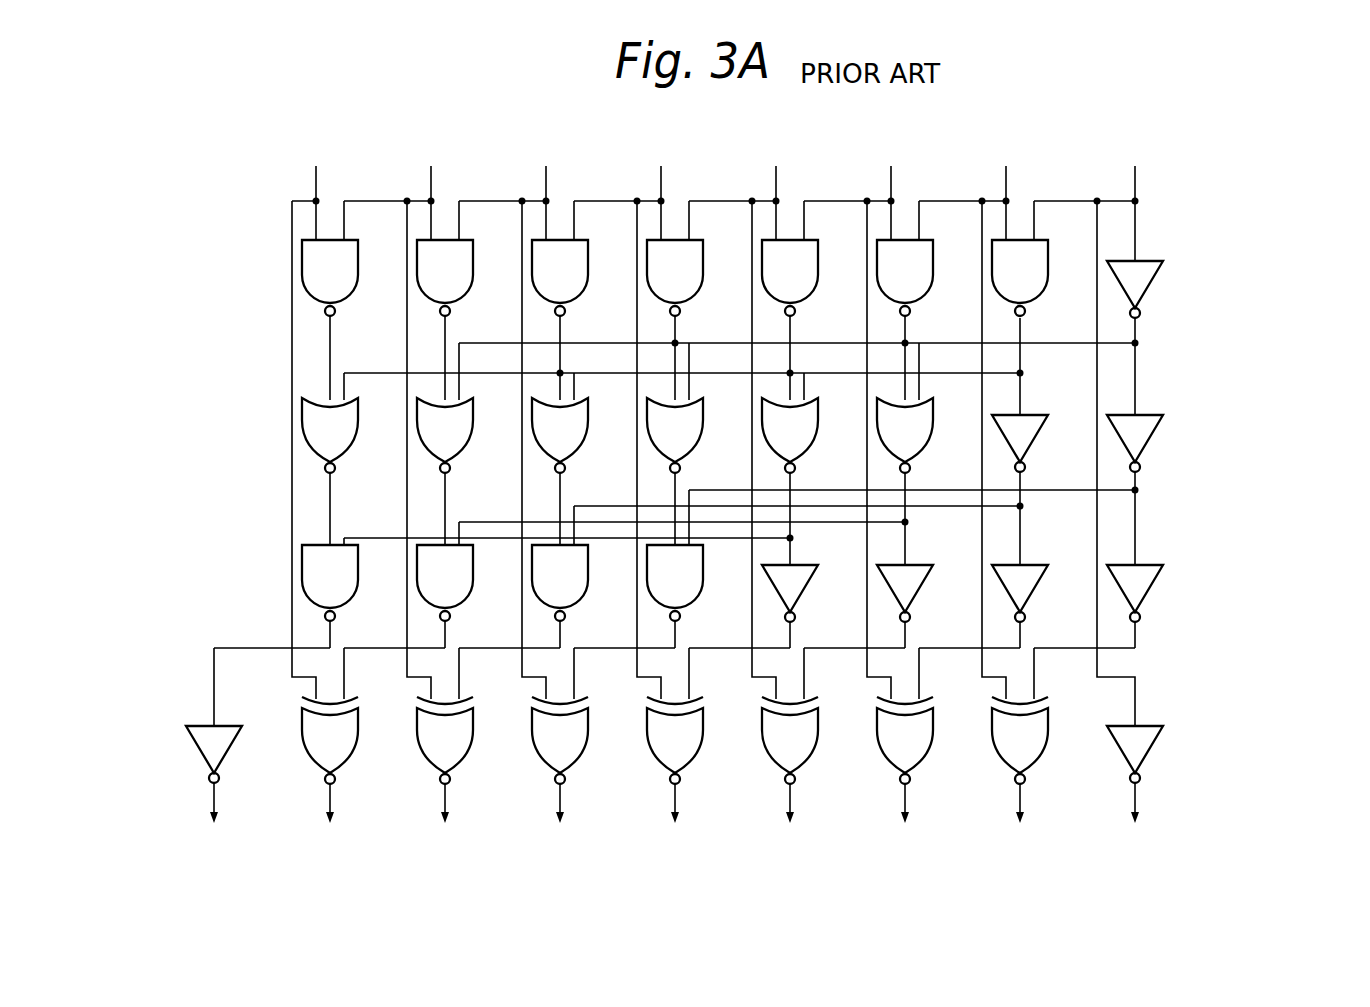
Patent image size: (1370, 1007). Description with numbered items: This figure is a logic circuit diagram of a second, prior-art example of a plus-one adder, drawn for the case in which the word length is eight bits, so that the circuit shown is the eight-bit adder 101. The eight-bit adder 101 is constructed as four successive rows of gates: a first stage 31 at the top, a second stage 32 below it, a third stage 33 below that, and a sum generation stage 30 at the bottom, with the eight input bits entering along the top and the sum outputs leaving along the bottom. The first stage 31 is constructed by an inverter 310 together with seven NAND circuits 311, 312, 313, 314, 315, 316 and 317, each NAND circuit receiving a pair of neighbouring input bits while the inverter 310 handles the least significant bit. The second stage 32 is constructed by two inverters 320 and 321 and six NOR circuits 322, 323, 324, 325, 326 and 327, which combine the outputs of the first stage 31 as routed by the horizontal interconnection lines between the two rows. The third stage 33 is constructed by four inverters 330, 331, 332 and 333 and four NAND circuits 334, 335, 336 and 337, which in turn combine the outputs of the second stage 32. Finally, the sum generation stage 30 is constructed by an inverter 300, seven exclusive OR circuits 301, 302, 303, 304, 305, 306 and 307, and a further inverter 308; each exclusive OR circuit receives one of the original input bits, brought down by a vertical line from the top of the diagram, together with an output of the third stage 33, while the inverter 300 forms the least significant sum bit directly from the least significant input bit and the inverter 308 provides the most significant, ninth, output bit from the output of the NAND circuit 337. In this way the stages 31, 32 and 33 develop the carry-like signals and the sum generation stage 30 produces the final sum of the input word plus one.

The 8-bit adder 101 is at (1328, 96).
The first stage 31 is at (1267, 274).
The second stage 32 is at (1267, 433).
The third stage 33 is at (1267, 583).
The sum generation stage 30 is at (1267, 746).
The NAND circuit 317 is at (347, 286).
The NAND circuit 316 is at (462, 286).
The NAND circuit 315 is at (577, 286).
The NAND circuit 314 is at (692, 286).
The NAND circuit 313 is at (807, 286).
The NAND circuit 312 is at (922, 286).
The NAND circuit 311 is at (1037, 286).
The inverter 310 is at (1151, 297).
The NOR circuit 327 is at (347, 444).
The NOR circuit 326 is at (462, 444).
The NOR circuit 325 is at (577, 444).
The NOR circuit 324 is at (692, 444).
The NOR circuit 323 is at (807, 444).
The NOR circuit 322 is at (922, 444).
The inverter 321 is at (1036, 452).
The inverter 320 is at (1151, 452).
The NAND circuit 337 is at (347, 591).
The NAND circuit 336 is at (462, 591).
The NAND circuit 335 is at (577, 591).
The NAND circuit 334 is at (692, 591).
The inverter 333 is at (806, 602).
The inverter 332 is at (921, 602).
The inverter 331 is at (1036, 602).
The inverter 330 is at (1151, 602).
The inverter 308 is at (230, 763).
The exclusive OR circuit 307 is at (347, 749).
The exclusive OR circuit 306 is at (462, 749).
The exclusive OR circuit 305 is at (577, 749).
The exclusive OR circuit 304 is at (692, 749).
The exclusive OR circuit 303 is at (807, 749).
The exclusive OR circuit 302 is at (922, 749).
The exclusive OR circuit 301 is at (1037, 749).
The inverter 300 is at (1151, 763).